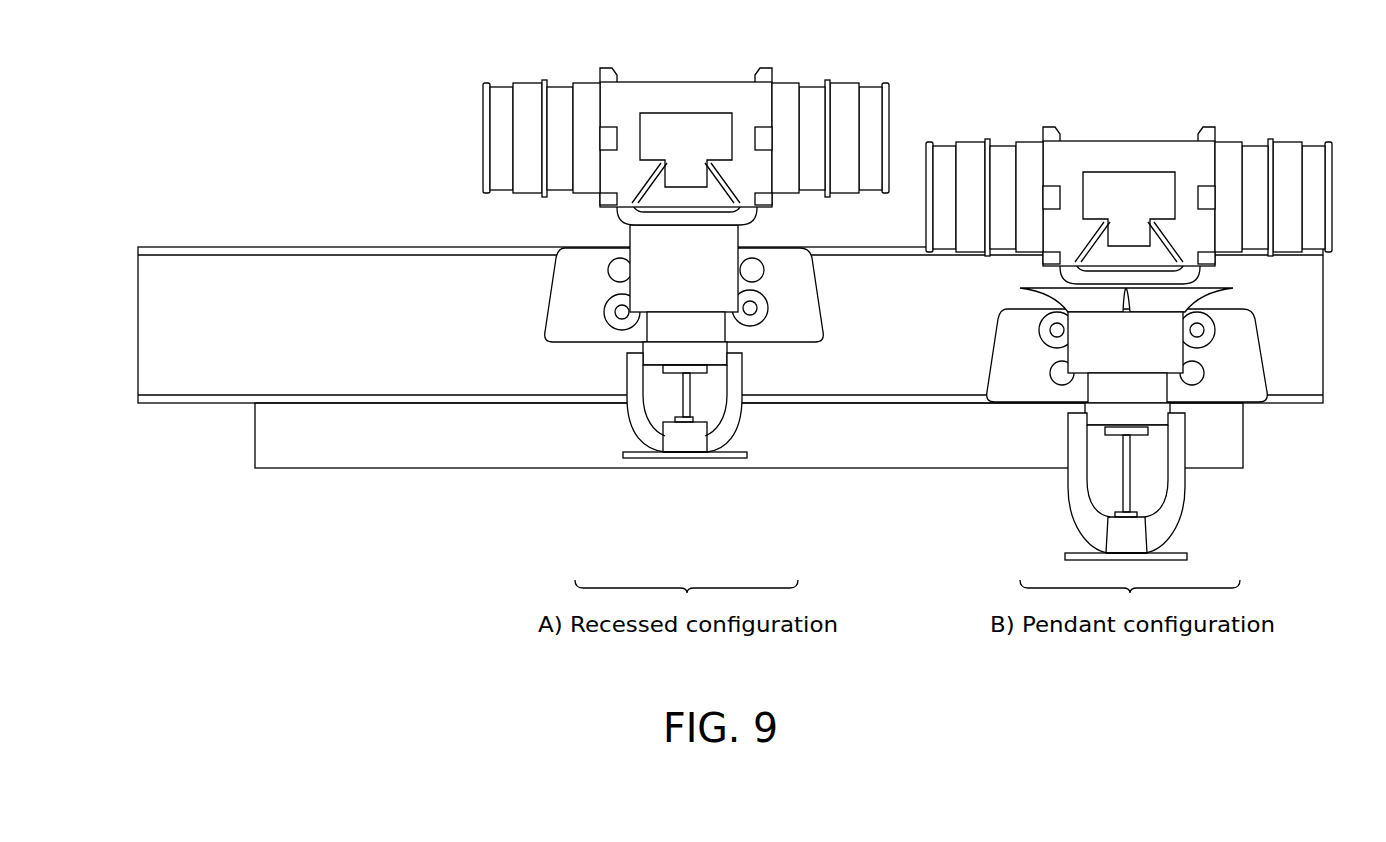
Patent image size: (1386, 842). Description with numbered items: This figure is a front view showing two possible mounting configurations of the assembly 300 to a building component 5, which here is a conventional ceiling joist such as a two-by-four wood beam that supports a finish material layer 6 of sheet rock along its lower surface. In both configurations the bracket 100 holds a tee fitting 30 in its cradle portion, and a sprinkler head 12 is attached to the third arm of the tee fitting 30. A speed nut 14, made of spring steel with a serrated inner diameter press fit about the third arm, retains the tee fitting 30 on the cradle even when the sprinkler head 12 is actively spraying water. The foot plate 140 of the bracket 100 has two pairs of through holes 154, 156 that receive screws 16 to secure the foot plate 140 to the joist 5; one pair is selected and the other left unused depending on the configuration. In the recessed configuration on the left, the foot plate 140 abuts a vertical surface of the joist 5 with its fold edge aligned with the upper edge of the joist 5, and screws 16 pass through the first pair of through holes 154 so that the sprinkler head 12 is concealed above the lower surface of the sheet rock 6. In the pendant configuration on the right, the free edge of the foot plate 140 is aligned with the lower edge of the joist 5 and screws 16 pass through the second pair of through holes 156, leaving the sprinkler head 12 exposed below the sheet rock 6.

The building component 5 is at (150, 352).
The finish material layer 6 is at (291, 455).
The sprinkler head 12 is at (735, 418).
The speed nut 14 is at (1215, 290).
The screws 16 is at (622, 313).
The tee fitting 30 is at (697, 93).
The bracket 100 is at (622, 212).
The foot plate 140 is at (565, 289).
The first pair of through holes 154 is at (760, 303).
The second pair of through holes 156 is at (757, 265).
The assembly 300 is at (447, 76).